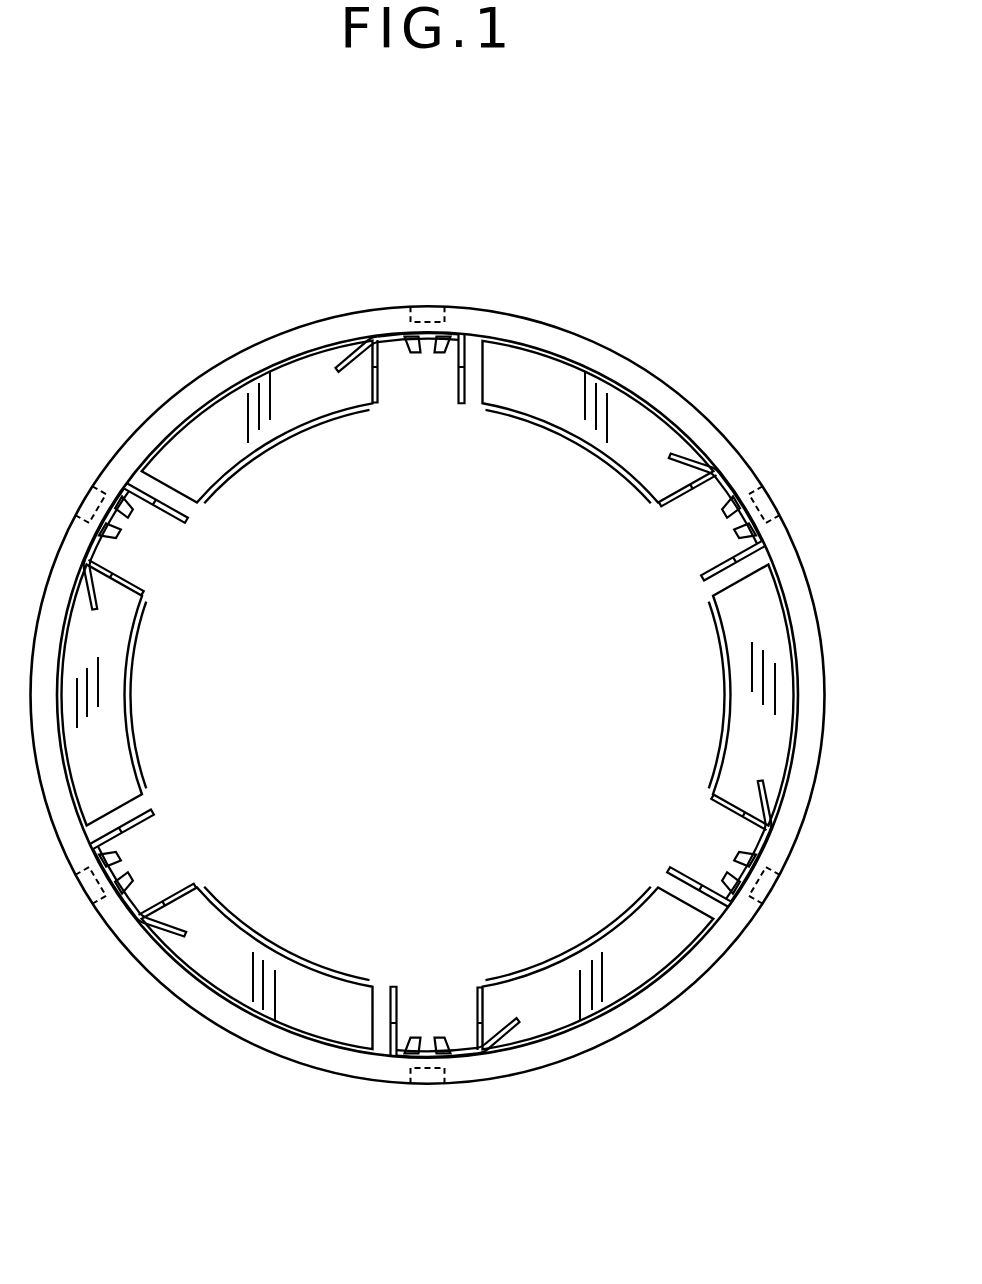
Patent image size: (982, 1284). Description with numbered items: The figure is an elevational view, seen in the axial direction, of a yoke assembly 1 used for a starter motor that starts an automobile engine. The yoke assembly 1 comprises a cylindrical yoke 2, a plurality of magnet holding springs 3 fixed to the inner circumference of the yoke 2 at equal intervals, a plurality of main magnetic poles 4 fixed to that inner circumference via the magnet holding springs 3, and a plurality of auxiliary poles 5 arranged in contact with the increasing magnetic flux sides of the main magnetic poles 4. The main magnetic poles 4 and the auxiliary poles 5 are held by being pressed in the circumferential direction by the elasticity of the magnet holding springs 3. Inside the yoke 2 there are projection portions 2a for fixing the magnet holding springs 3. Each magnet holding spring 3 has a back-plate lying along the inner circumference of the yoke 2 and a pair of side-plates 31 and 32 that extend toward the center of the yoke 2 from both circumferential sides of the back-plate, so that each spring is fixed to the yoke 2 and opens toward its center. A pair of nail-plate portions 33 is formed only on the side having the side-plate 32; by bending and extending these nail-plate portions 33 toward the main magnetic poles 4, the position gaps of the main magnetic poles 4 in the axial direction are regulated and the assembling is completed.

The yoke assembly 1 is at (667, 336).
The cylindrical yoke 2 is at (216, 372).
The projection portion 2a is at (411, 356).
The magnet holding spring 3 is at (390, 327).
The side-plate 31 is at (466, 378).
The side-plate 32 is at (373, 380).
The nail-plate portion 33 is at (339, 369).
The main magnetic pole 4 is at (190, 450).
The auxiliary pole 5 is at (471, 353).